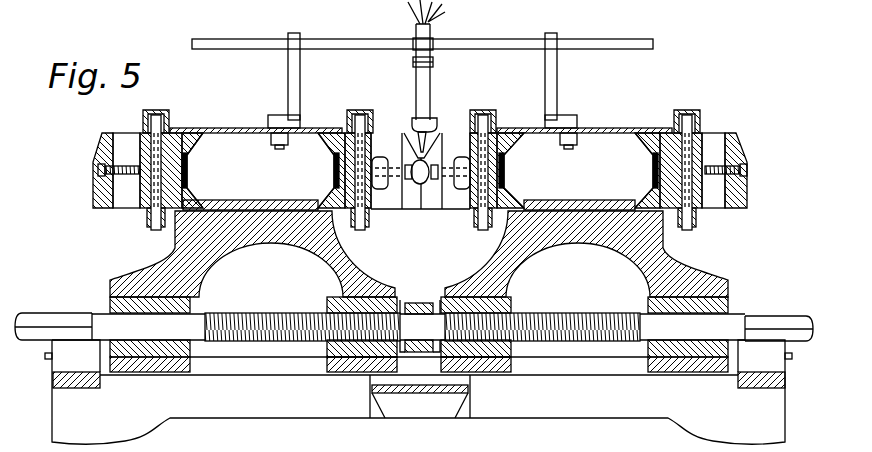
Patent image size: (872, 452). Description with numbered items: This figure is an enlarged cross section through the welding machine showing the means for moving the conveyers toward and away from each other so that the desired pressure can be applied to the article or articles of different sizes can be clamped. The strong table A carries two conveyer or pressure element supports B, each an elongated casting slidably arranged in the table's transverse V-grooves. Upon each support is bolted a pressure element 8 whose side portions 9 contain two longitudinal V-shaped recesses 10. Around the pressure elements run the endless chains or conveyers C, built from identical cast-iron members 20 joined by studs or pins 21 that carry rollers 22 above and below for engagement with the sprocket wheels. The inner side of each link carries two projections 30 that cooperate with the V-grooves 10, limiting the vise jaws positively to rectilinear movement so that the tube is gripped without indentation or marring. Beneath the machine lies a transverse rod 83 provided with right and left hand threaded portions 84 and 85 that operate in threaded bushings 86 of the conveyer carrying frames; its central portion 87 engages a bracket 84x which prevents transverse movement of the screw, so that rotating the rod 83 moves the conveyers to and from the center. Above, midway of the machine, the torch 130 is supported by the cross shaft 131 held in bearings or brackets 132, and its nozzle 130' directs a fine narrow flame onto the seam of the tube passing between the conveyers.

The table A is at (297, 400).
The conveyer or pressure element support B is at (419, 254).
The endless chain or conveyer C is at (100, 147).
The pressure element 8 is at (208, 128).
The side portion 9 is at (188, 171).
The longitudinal V-shaped recess 10 is at (200, 146).
The conveyer member 20 is at (125, 200).
The stud or pin 21 is at (148, 228).
The roller 22 is at (145, 120).
The projection 30 is at (184, 130).
The transverse rod 83 is at (100, 318).
The right hand threaded portion 84 is at (257, 313).
The bracket 84x is at (423, 305).
The left hand threaded portion 85 is at (580, 313).
The threaded bushing 86 is at (326, 304).
The central portion 87 is at (422, 345).
The torch 130 is at (442, 60).
The nozzle 130' is at (441, 131).
The cross shaft 131 is at (330, 39).
The bearing or bracket 132 is at (297, 82).